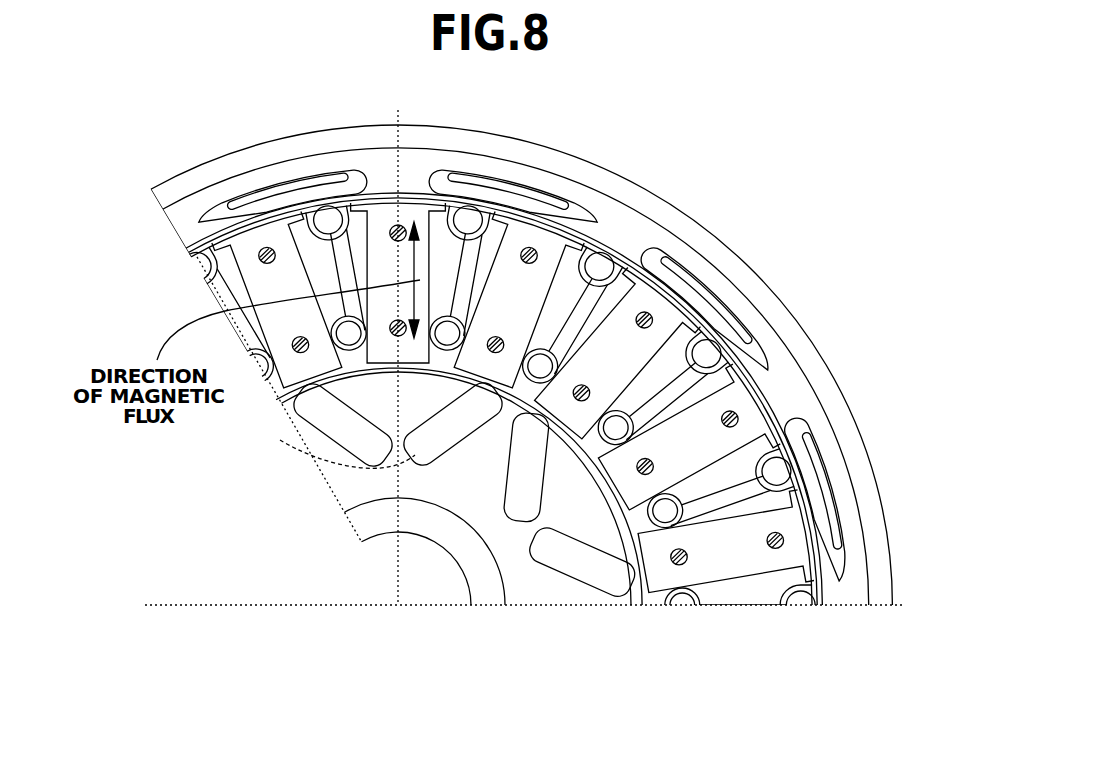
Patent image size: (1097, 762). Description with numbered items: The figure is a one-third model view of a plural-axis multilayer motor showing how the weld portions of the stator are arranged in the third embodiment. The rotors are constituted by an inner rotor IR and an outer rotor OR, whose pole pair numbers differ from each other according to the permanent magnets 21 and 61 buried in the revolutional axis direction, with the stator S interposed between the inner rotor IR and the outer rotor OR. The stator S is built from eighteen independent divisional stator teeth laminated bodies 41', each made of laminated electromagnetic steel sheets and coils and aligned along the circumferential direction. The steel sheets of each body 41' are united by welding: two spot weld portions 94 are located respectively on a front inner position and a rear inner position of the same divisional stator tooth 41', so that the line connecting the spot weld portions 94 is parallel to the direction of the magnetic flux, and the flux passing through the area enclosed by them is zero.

The permanent magnets 21 is at (437, 442).
The divisional stator teeth laminated body 41' is at (562, 314).
The permanent magnets 61 is at (303, 188).
The spot weld portions 94 is at (496, 337).
The inner rotor IR is at (570, 603).
The stator S is at (757, 603).
The outer rotor OR is at (845, 603).